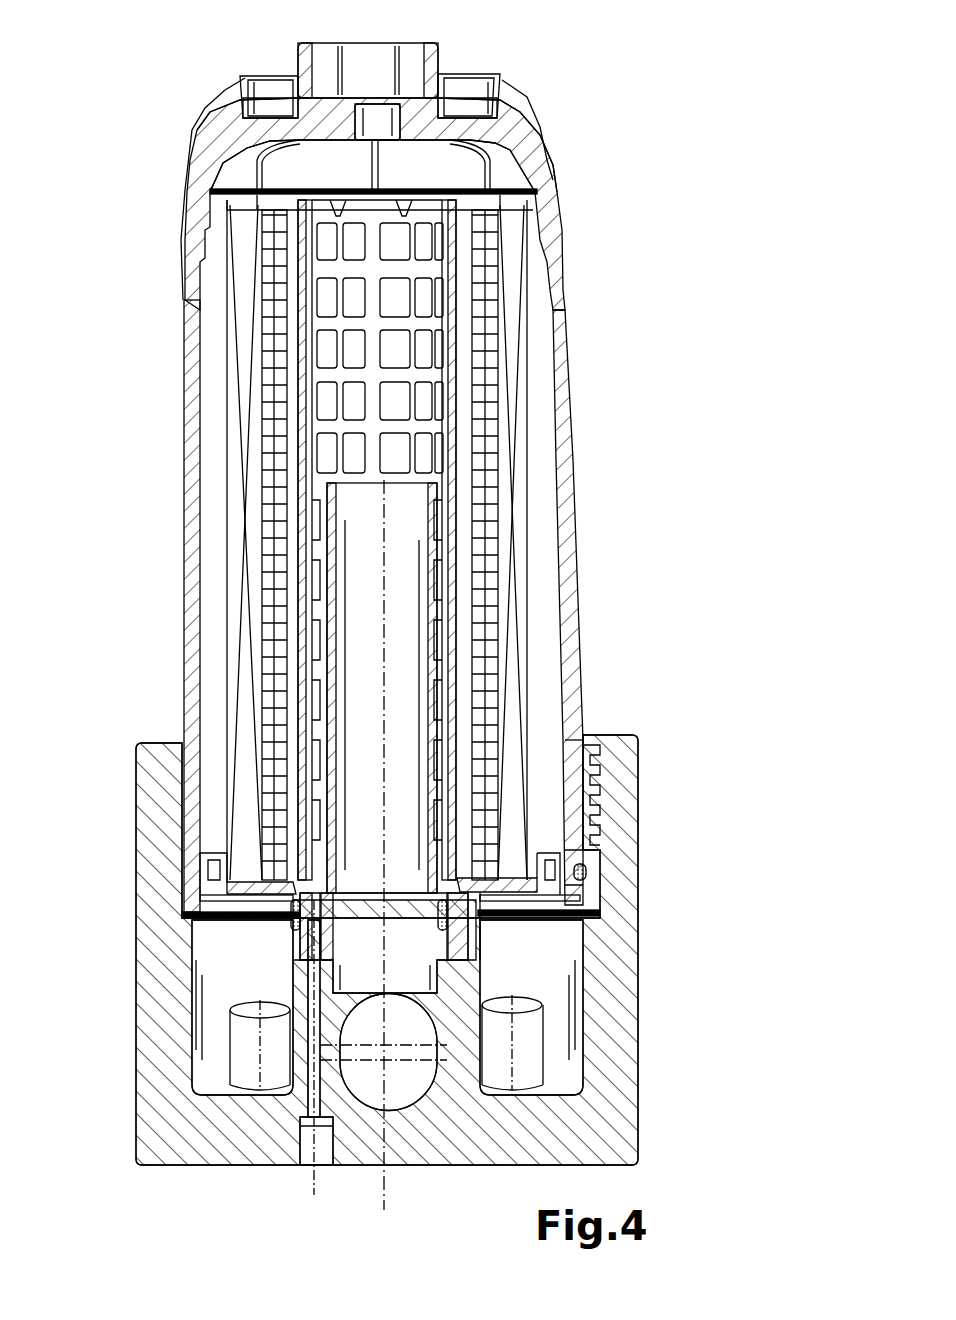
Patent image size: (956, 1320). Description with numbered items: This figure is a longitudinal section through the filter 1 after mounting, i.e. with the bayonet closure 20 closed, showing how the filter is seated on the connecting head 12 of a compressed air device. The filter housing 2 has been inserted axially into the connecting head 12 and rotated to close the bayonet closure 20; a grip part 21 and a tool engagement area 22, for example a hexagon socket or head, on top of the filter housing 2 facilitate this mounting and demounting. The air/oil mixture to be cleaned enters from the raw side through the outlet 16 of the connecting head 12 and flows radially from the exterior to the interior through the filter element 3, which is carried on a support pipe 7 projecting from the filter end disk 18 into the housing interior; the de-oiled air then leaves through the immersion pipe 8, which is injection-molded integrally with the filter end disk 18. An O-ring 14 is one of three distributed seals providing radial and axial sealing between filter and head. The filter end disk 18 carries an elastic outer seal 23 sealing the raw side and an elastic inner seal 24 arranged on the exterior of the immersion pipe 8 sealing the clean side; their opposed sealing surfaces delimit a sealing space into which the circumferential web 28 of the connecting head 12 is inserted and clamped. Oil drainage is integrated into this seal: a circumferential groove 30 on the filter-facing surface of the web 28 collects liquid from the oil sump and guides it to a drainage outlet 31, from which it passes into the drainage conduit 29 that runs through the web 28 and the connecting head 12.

The filter 1 is at (665, 86).
The filter housing 2 is at (568, 290).
The filter element 3 is at (245, 325).
The support pipe 7 is at (452, 372).
The immersion pipe 8 is at (400, 505).
The connecting head 12 is at (620, 763).
The O-ring 14 is at (590, 873).
The outlet 16 is at (406, 1080).
The filter end disk 18 is at (262, 897).
The bayonet closure 20 is at (604, 795).
The grip part 21 is at (527, 110).
The tool engagement area 22 is at (432, 54).
The outer seal 23 is at (292, 932).
The inner seal 24 is at (333, 935).
The web 28 is at (440, 934).
The drainage conduit 29 is at (304, 1100).
The circumferential groove 30 is at (450, 892).
The drainage outlet 31 is at (320, 1150).